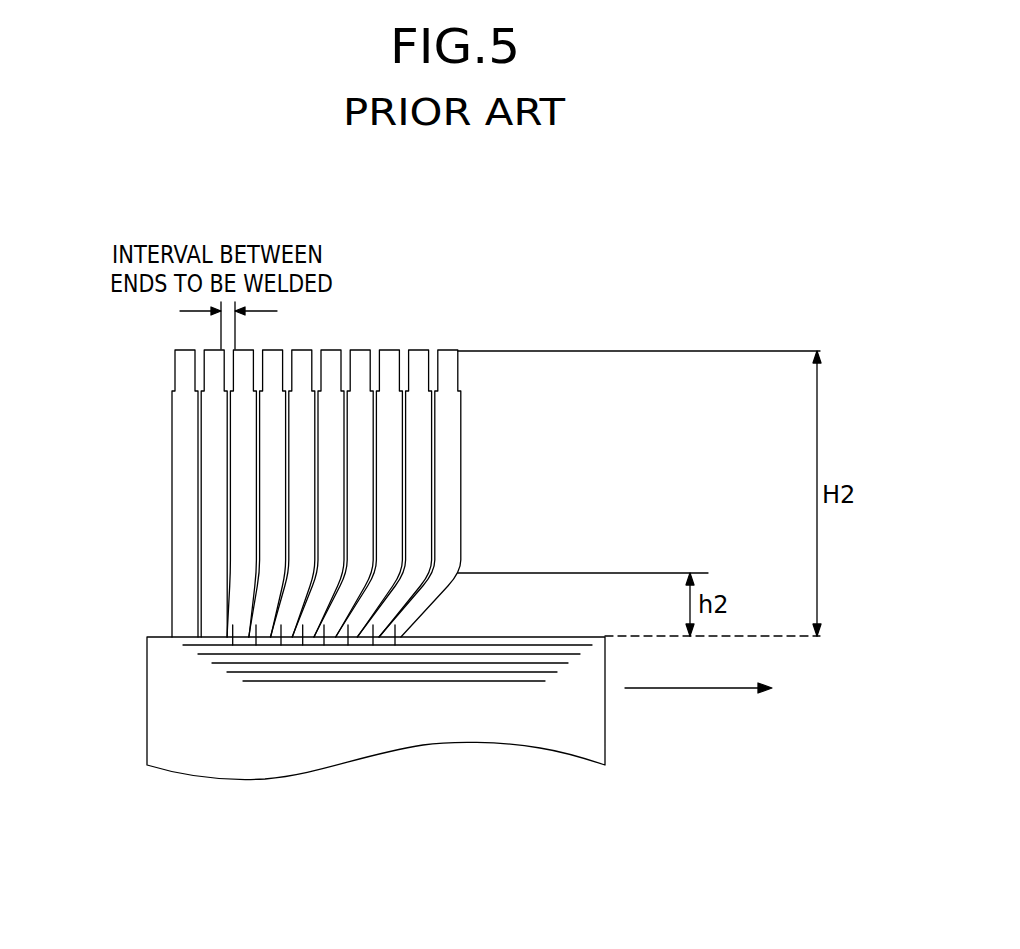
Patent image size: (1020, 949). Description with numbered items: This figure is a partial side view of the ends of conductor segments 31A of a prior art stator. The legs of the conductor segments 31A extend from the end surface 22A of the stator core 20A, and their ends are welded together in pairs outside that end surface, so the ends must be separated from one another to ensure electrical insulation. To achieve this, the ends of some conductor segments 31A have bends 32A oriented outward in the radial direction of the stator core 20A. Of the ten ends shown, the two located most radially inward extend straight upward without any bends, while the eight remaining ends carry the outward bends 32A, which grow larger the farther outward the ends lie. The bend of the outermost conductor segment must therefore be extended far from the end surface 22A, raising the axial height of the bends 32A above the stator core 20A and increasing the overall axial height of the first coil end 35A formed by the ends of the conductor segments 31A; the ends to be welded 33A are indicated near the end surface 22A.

The conductor segments 31A is at (298, 517).
The first coil end 35A is at (460, 537).
The stator core 20A is at (453, 714).
The end surface 22A is at (511, 638).
The ends to be welded 33A is at (267, 812).
The bends 32A is at (360, 812).